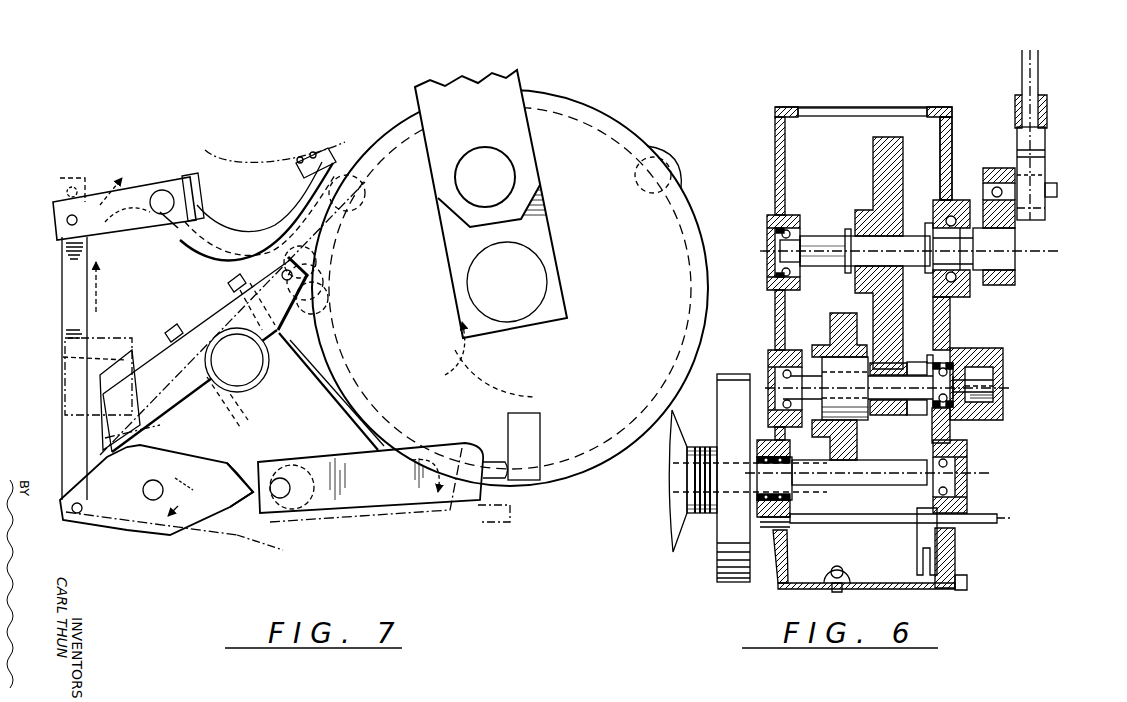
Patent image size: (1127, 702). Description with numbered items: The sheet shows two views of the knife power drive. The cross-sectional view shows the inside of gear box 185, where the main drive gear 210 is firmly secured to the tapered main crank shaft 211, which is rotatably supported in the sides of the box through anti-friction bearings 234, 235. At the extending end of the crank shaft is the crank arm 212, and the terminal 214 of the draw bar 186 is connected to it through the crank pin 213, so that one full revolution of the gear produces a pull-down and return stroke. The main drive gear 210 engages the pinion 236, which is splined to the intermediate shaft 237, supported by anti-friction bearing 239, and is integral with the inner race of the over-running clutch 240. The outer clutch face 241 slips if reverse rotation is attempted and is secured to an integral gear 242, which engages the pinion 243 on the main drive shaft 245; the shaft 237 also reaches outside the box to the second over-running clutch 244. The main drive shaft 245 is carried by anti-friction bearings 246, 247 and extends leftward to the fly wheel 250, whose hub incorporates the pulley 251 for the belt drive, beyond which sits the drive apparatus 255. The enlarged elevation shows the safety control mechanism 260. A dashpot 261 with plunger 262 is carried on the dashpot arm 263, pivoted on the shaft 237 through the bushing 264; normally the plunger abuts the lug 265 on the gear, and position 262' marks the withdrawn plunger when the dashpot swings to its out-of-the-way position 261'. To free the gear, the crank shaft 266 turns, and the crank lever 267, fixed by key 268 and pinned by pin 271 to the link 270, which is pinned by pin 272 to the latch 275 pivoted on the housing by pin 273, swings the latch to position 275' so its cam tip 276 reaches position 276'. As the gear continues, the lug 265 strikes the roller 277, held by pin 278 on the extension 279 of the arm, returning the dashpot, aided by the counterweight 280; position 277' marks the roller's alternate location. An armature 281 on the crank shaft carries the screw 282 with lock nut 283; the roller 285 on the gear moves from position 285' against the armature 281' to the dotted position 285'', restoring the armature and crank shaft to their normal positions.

In FIG. 6, the gear box 185 is at (857, 105).
In FIG. 6, the draw bar 186 is at (1033, 88).
In FIG. 7, the main drive gear 210 is at (607, 108).
In FIG. 6, the main drive gear 210 is at (868, 169).
In FIG. 7, the main crank shaft 211 is at (535, 289).
In FIG. 6, the main crank shaft 211 is at (850, 258).
In FIG. 7, the crank arm 212 is at (550, 233).
In FIG. 6, the crank arm 212 is at (997, 167).
In FIG. 7, the crank pin 213 is at (508, 175).
In FIG. 6, the crank pin 213 is at (1035, 190).
In FIG. 7, the terminal of the draw bar 214 is at (525, 141).
In FIG. 6, the terminal of the draw bar 214 is at (1043, 149).
In FIG. 6, the anti-friction bearing 234 is at (775, 238).
In FIG. 6, the anti-friction bearing 235 is at (940, 205).
In FIG. 6, the pinion 236 is at (882, 415).
In FIG. 7, the intermediate shaft 237 is at (245, 378).
In FIG. 6, the intermediate shaft 237 is at (940, 384).
In FIG. 6, the anti-friction bearing 239 is at (944, 362).
In FIG. 6, the over-running clutch 240 is at (866, 422).
In FIG. 6, the outer clutch face 241 is at (823, 326).
In FIG. 6, the integral gear 242 is at (858, 452).
In FIG. 6, the pinion 243 is at (822, 459).
In FIG. 6, the second over-running clutch 244 is at (1006, 412).
In FIG. 6, the main drive shaft 245 is at (677, 473).
In FIG. 6, the anti-friction bearing 246 is at (788, 508).
In FIG. 6, the anti-friction bearing 247 is at (967, 456).
In FIG. 6, the fly wheel 250 is at (712, 557).
In FIG. 6, the pulley 251 is at (709, 442).
In FIG. 6, the drive apparatus 255 is at (668, 528).
In FIG. 7, the safety control mechanism 260 is at (238, 92).
In FIG. 7, the dashpot 261 is at (370, 515).
In FIG. 7, the dashpot out-of-the-way position 261' is at (370, 517).
In FIG. 7, the plunger 262 is at (516, 488).
In FIG. 7, the plunger phantom position 262' is at (516, 524).
In FIG. 7, the dashpot arm 263 is at (318, 378).
In FIG. 6, the dashpot arm 263 is at (917, 361).
In FIG. 7, the bushing 264 is at (217, 330).
In FIG. 6, the bushing 264 is at (931, 355).
In FIG. 7, the lug 265 is at (538, 432).
In FIG. 7, the crank shaft 266 is at (163, 195).
In FIG. 7, the crank lever 267 is at (97, 200).
In FIG. 7, the key 268 is at (160, 224).
In FIG. 7, the link 270 is at (62, 277).
In FIG. 7, the pin 271 is at (67, 219).
In FIG. 7, the pin 272 is at (76, 514).
In FIG. 7, the pin 273 is at (155, 482).
In FIG. 7, the latch 275 is at (156, 513).
In FIG. 7, the latch dashed line position 275' is at (152, 510).
In FIG. 7, the cam tip 276 is at (219, 491).
In FIG. 7, the cam tip out-of-the-way position 276' is at (276, 543).
In FIG. 7, the roller 277 is at (341, 256).
In FIG. 7, the pivot pin phantom position 277' is at (348, 297).
In FIG. 7, the pin 278 is at (276, 279).
In FIG. 7, the extension 279 is at (290, 317).
In FIG. 7, the counterweight 280 is at (103, 367).
In FIG. 7, the armature 281 is at (281, 179).
In FIG. 7, the armature dashed line position 281' is at (310, 186).
In FIG. 7, the screw 282 is at (300, 157).
In FIG. 7, the lock nut 283 is at (314, 152).
In FIG. 7, the roller 285 is at (677, 159).
In FIG. 7, the roller position 285' is at (351, 281).
In FIG. 7, the roller dotted position 285'' is at (378, 193).